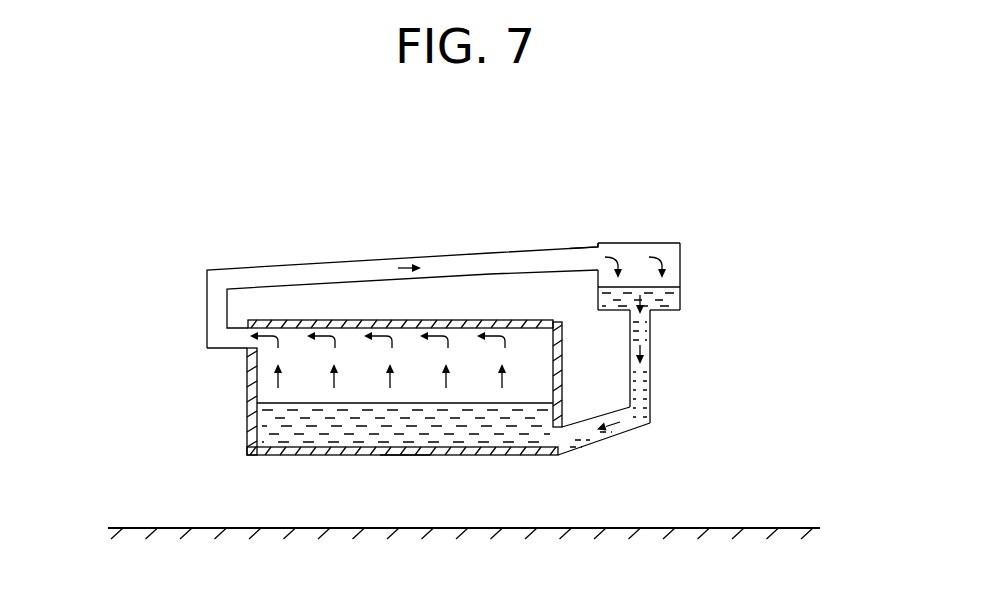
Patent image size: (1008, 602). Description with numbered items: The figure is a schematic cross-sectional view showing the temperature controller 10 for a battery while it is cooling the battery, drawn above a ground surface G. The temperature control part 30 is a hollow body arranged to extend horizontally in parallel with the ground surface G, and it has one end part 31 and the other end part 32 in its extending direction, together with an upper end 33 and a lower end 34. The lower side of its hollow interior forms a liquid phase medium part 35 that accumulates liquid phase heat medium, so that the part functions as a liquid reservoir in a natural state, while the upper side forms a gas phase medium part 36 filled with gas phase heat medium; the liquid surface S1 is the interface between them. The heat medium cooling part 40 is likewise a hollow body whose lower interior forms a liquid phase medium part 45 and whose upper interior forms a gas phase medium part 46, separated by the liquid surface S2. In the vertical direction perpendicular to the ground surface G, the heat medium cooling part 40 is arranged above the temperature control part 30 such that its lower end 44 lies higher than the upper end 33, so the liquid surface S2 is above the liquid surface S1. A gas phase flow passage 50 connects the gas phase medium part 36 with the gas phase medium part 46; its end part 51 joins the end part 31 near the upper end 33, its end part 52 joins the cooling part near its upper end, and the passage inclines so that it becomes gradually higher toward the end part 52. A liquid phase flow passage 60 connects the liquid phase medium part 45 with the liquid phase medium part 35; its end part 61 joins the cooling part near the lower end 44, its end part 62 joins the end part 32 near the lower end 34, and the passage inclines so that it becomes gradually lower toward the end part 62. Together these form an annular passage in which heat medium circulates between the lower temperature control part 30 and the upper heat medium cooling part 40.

The temperature controller for a battery 10 is at (683, 179).
The temperature control part 30 is at (346, 456).
The one end part 31 is at (246, 432).
The other end part 32 is at (562, 383).
The upper end 33 is at (405, 319).
The lower end 34 is at (405, 456).
The liquid phase medium part 35 is at (470, 436).
The gas phase medium part 36 is at (534, 340).
The heat medium cooling part 40 is at (668, 244).
The lower end 44 is at (670, 311).
The liquid phase medium part 45 is at (614, 302).
The gas phase medium part 46 is at (637, 251).
The gas phase flow passage 50 is at (368, 268).
The end part 51 is at (243, 353).
The end part 52 is at (588, 248).
The liquid phase flow passage 60 is at (648, 384).
The end part 61 is at (651, 322).
The end part 62 is at (563, 441).
The liquid surface S1 is at (272, 402).
The liquid surface S2 is at (666, 288).
The ground surface G is at (749, 528).